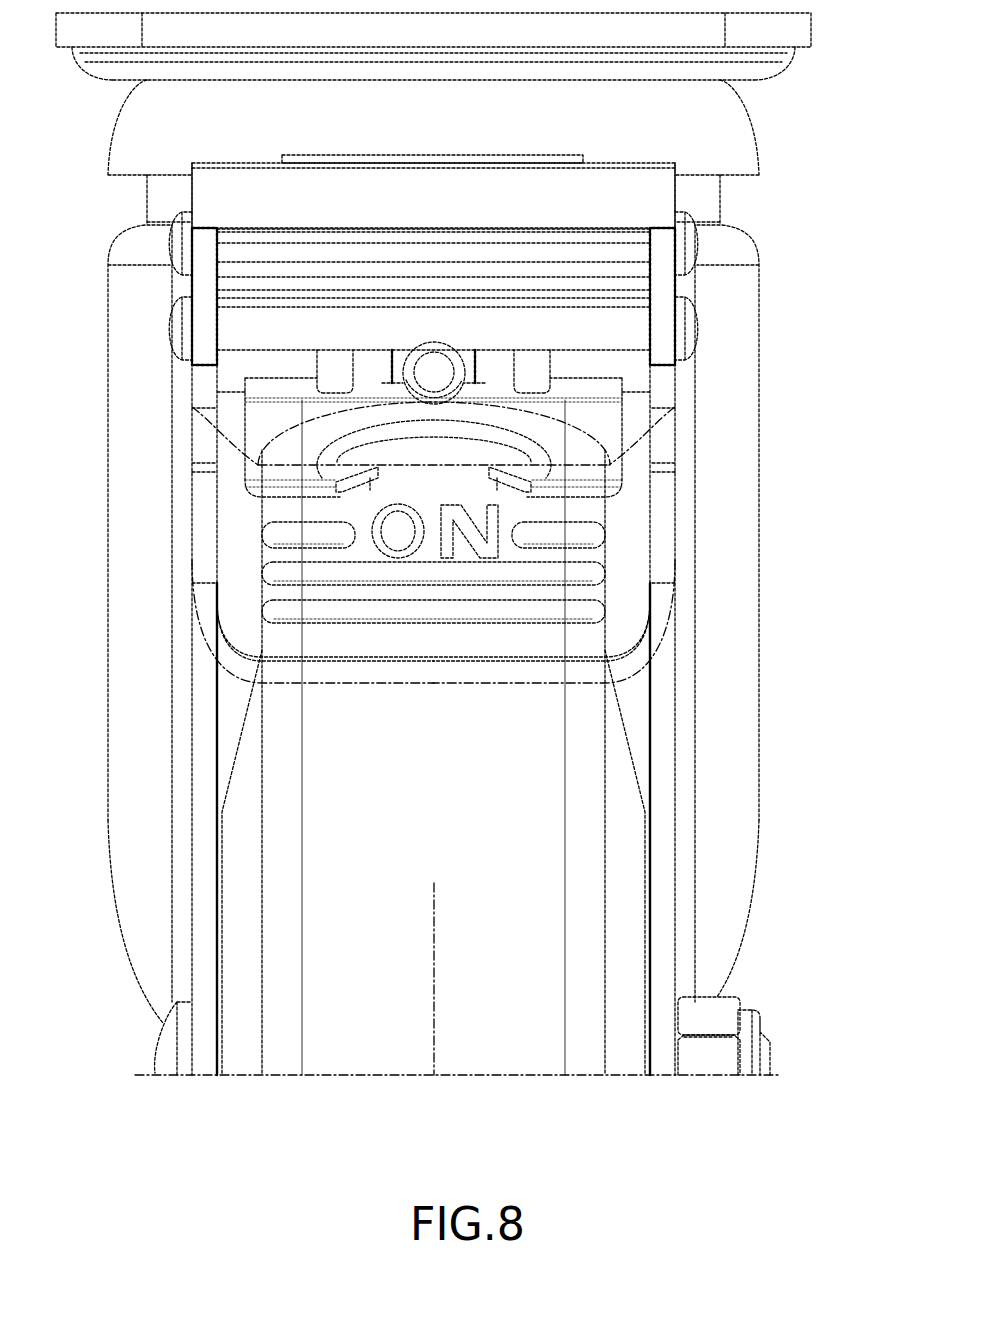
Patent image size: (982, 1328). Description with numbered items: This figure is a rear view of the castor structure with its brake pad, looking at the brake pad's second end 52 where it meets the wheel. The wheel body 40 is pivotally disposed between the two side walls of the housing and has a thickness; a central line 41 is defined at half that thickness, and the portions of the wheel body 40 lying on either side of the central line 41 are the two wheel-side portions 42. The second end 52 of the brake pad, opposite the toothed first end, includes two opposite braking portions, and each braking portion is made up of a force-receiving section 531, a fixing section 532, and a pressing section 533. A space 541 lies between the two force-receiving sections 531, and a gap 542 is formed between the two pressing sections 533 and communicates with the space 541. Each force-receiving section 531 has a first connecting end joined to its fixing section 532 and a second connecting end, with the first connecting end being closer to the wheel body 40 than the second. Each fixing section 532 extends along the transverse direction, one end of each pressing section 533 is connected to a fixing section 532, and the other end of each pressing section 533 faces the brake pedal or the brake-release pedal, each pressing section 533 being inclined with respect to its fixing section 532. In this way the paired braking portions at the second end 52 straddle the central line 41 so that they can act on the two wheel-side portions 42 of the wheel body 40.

The wheel body 40 is at (582, 918).
The central line 41 is at (433, 1047).
The wheel-side portions 42 is at (562, 1098).
The second end 52 is at (633, 484).
The force-receiving section 531 is at (602, 413).
The fixing section 532 is at (620, 505).
The pressing section 533 is at (515, 497).
The space 541 is at (495, 460).
The gap 542 is at (402, 483).